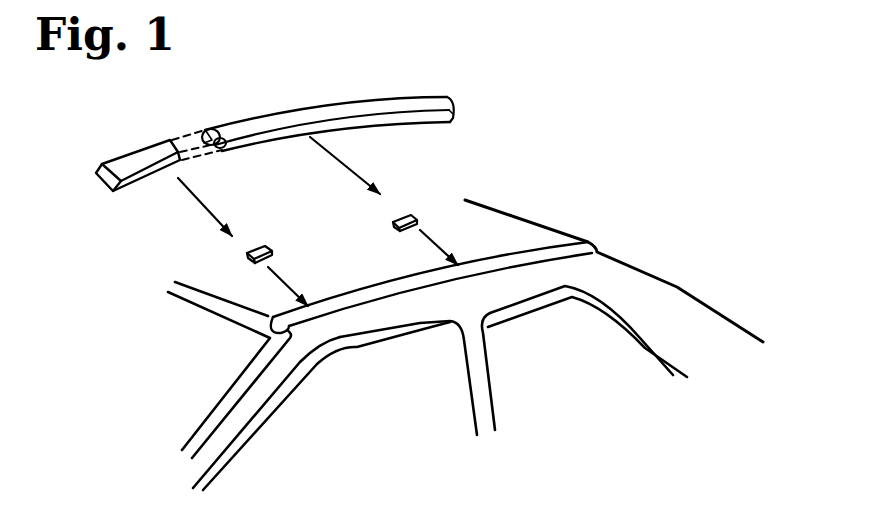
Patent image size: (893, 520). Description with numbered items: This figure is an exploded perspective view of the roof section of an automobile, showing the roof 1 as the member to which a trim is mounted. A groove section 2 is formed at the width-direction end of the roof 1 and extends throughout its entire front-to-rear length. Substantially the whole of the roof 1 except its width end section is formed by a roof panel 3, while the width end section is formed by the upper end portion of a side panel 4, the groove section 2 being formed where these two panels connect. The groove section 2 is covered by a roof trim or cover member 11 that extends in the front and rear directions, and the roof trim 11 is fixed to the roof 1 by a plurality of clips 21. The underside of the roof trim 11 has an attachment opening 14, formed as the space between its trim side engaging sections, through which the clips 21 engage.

The roof 1 is at (496, 210).
The groove section 2 is at (530, 255).
The roof panel 3 is at (221, 285).
The side panel 4 is at (344, 320).
The roof trim 11 is at (267, 120).
The attachment opening 14 is at (208, 144).
The clip 21 is at (262, 244).